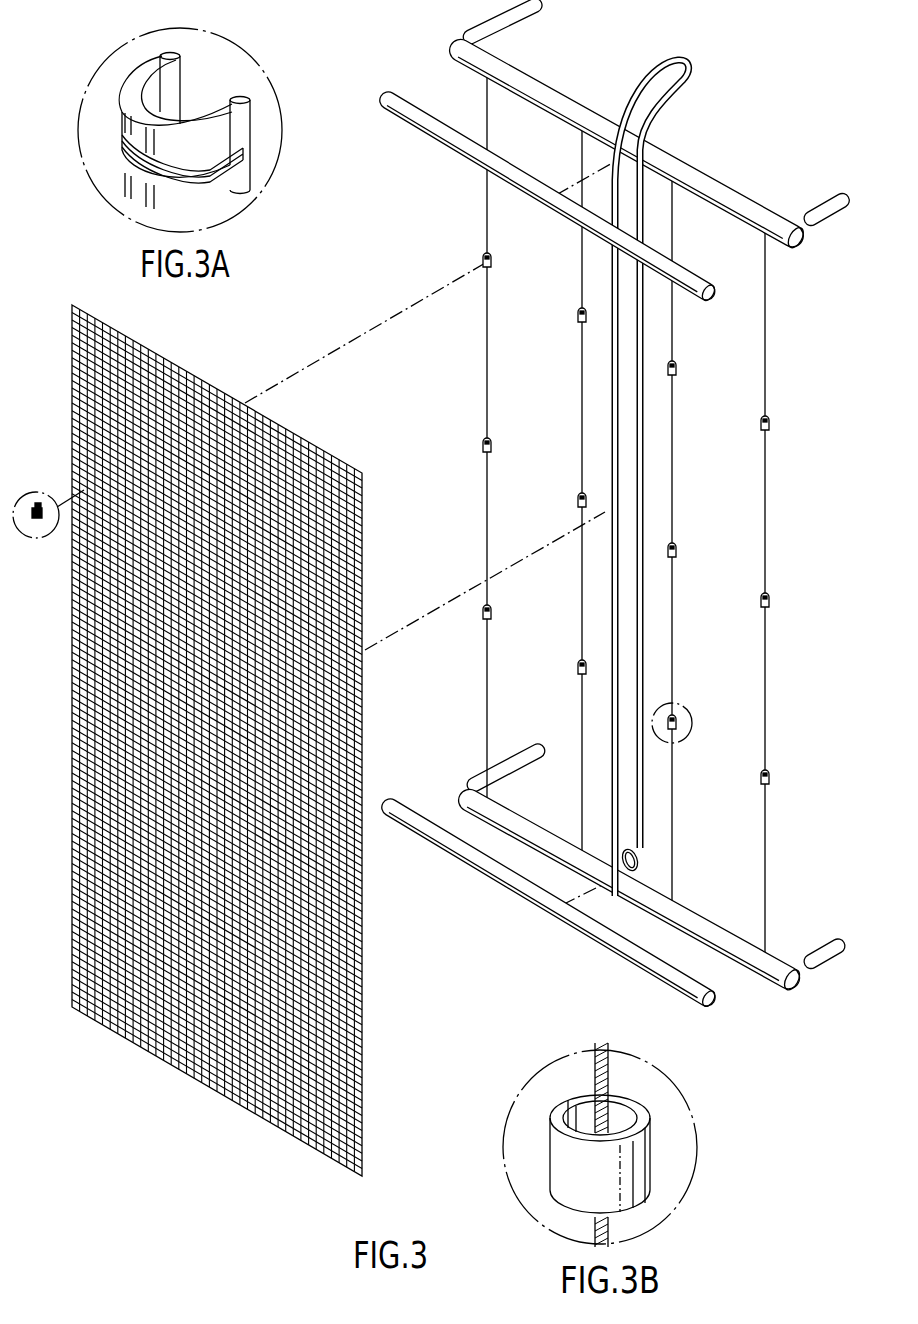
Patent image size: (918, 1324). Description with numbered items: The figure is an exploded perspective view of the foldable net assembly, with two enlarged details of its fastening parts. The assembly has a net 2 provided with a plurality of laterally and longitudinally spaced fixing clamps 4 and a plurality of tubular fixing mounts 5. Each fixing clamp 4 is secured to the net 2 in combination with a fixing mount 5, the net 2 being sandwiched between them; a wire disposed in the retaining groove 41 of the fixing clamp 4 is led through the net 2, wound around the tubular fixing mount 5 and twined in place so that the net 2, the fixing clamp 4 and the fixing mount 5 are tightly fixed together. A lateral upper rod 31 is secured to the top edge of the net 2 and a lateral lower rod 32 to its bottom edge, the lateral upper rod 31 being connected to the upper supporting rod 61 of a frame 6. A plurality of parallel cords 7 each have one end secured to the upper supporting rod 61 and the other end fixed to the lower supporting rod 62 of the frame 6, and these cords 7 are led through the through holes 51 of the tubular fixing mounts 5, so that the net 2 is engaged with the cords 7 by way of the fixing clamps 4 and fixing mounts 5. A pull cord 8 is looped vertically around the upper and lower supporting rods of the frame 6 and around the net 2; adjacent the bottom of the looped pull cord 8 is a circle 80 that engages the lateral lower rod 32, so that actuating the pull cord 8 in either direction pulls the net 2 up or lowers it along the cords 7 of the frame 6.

In FIG. 3, the net 2 is at (368, 936).
In FIG. 3A, the fixing clamp 4 is at (211, 137).
In FIG. 3A, the retaining groove 41 is at (208, 174).
In FIG. 3B, the tubular fixing mount 5 is at (606, 1131).
In FIG. 3B, the through hole 51 is at (583, 1110).
In FIG. 3, the frame 6 is at (546, 27).
In FIG. 3, the upper supporting rod 61 is at (697, 168).
In FIG. 3, the lower supporting rod 62 is at (686, 908).
In FIG. 3B, the cord 7 is at (612, 1068).
In FIG. 3, the pull cord 8 is at (676, 467).
In FIG. 3, the circle 80 is at (642, 847).
In FIG. 3, the lateral upper rod 31 is at (700, 266).
In FIG. 3, the lateral lower rod 32 is at (717, 1000).